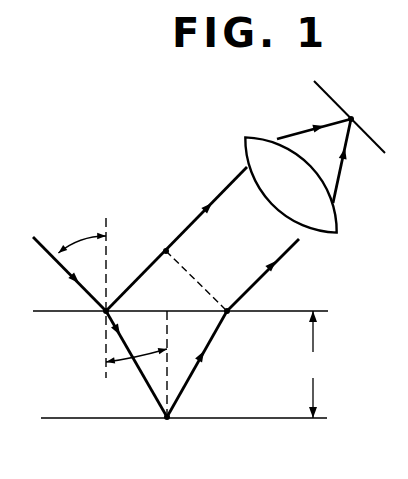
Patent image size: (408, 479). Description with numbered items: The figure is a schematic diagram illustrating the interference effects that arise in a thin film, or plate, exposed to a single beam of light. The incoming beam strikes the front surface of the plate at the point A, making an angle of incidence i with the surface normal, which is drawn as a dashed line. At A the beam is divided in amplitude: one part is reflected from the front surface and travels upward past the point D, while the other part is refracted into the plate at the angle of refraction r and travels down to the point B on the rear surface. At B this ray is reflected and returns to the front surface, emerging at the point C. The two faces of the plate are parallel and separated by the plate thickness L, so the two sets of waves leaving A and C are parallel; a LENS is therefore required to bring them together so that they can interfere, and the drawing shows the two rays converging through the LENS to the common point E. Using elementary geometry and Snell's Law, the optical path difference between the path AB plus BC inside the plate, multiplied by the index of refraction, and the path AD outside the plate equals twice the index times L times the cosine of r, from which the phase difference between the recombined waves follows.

The front surface reflection point A is at (97, 321).
The rear surface reflection point B is at (166, 428).
The front surface exit point C is at (234, 322).
The path difference reference point D is at (160, 239).
The recombination point E is at (357, 113).
The angle of incidence i is at (81, 237).
The angle of refraction r is at (136, 359).
The plate thickness L is at (313, 364).
The lens LENS is at (291, 185).